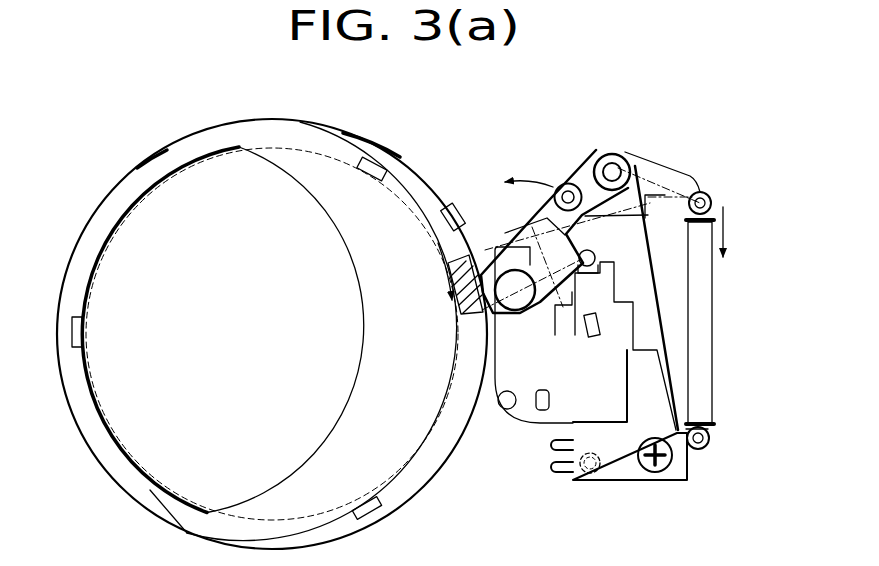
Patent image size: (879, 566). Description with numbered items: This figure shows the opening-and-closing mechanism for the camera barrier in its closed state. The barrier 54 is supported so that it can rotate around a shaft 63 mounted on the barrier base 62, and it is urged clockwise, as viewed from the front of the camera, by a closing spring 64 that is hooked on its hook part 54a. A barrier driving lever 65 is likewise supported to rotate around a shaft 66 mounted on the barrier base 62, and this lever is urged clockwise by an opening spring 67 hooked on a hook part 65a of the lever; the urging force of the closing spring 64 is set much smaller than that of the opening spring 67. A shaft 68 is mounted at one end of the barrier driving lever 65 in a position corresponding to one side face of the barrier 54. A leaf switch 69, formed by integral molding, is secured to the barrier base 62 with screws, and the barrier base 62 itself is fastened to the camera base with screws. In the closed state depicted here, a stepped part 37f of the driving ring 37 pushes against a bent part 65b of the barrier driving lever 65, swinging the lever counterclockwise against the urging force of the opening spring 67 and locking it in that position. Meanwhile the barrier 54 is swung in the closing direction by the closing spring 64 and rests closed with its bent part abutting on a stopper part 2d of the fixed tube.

The driving ring 37 is at (240, 120).
The barrier 54 is at (313, 140).
The stopper part 2d is at (452, 198).
The stepped part 37f is at (457, 313).
The barrier driving lever 65 is at (507, 243).
The shaft 63 is at (610, 162).
The shaft 68 is at (562, 185).
The bent part 65b is at (494, 305).
The hook part 65a is at (628, 205).
The barrier base 62 is at (660, 310).
The opening spring 67 is at (642, 284).
The leaf switch 69 is at (621, 482).
The shaft 66 is at (526, 310).
The closing spring 64 is at (712, 343).
The hook part 54a is at (703, 192).